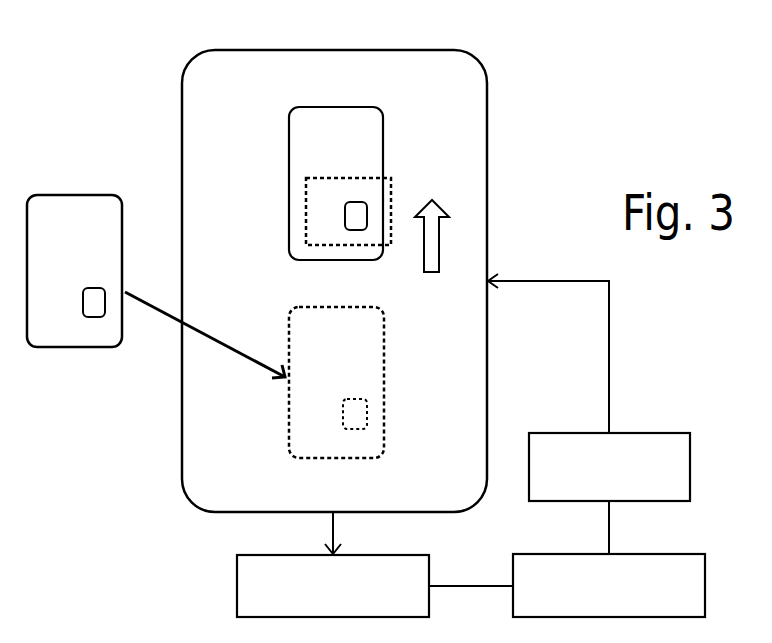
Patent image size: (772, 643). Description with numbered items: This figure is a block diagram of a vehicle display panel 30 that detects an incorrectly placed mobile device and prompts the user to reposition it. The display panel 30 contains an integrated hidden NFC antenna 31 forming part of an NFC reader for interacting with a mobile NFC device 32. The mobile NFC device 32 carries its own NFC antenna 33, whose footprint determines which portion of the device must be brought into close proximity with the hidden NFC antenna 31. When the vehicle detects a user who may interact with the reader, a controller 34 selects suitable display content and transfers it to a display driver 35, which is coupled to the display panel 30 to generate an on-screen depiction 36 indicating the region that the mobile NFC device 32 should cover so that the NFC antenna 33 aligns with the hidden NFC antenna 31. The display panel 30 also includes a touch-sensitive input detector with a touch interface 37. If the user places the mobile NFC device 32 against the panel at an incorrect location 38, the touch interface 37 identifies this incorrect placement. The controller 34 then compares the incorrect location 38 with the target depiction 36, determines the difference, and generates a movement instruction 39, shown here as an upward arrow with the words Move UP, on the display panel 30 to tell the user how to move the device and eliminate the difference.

The display panel 30 is at (488, 90).
The hidden NFC antenna 31 is at (392, 193).
The mobile NFC device 32 is at (32, 345).
The NFC antenna 33 is at (98, 318).
The controller 34 is at (705, 572).
The display driver 35 is at (690, 450).
The on-screen depiction 36 is at (303, 98).
The touch interface 37 is at (237, 572).
The incorrect location 38 is at (295, 460).
The movement instruction 39 is at (429, 342).